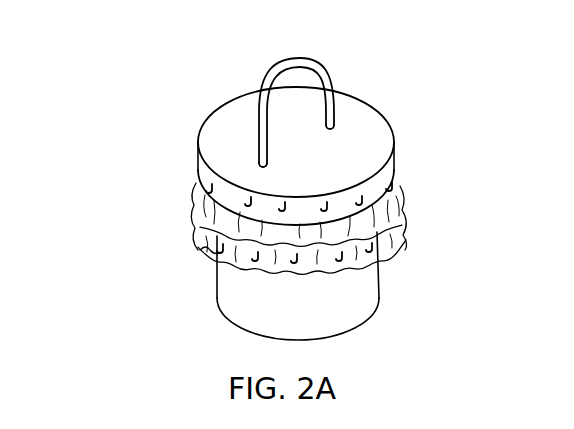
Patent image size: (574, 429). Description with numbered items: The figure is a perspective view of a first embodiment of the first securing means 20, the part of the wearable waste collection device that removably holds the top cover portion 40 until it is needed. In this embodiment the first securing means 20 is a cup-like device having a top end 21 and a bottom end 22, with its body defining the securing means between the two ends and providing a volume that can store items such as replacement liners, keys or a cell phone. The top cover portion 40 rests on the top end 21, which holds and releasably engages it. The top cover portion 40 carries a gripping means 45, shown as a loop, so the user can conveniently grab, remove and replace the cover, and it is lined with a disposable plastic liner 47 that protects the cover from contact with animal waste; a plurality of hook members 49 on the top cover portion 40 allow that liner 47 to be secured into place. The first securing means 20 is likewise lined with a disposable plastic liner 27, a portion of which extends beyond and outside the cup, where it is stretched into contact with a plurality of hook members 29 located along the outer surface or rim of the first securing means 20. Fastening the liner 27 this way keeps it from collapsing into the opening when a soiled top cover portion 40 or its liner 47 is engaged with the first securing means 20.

The first securing means 20 is at (115, 117).
The top end 21 is at (145, 190).
The bottom end 22 is at (402, 308).
The disposable plastic liner 27 is at (398, 242).
The hook members 29 is at (222, 246).
The top cover portion 40 is at (374, 138).
The gripping means 45 is at (330, 73).
The disposable plastic liner 47 is at (396, 212).
The hook members 49 is at (196, 184).